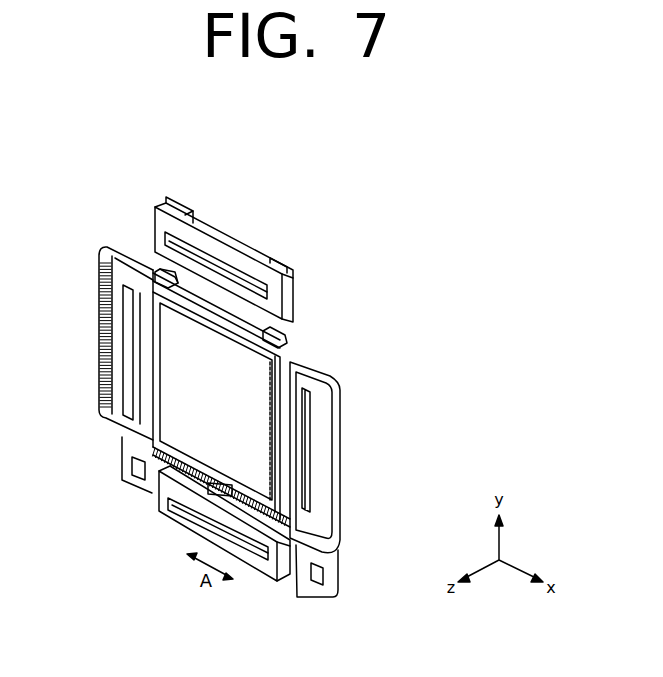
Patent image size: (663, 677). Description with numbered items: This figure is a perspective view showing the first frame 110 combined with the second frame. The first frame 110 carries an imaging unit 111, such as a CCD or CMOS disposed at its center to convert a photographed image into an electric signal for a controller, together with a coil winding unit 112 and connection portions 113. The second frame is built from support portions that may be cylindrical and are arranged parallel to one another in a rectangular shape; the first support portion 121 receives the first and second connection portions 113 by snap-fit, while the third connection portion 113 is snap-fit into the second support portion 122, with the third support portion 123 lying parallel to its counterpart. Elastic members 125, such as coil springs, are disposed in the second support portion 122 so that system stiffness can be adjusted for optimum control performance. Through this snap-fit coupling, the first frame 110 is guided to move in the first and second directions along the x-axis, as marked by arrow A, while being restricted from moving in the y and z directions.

The first frame 110 is at (290, 327).
The imaging unit 111 is at (173, 436).
The coil winding unit 112 is at (223, 257).
The connection portion 113 is at (160, 272).
The first support portion 121 is at (320, 360).
The second support portion 122 is at (296, 546).
The third support portion 123 is at (340, 483).
The elastic member 125 is at (100, 384).